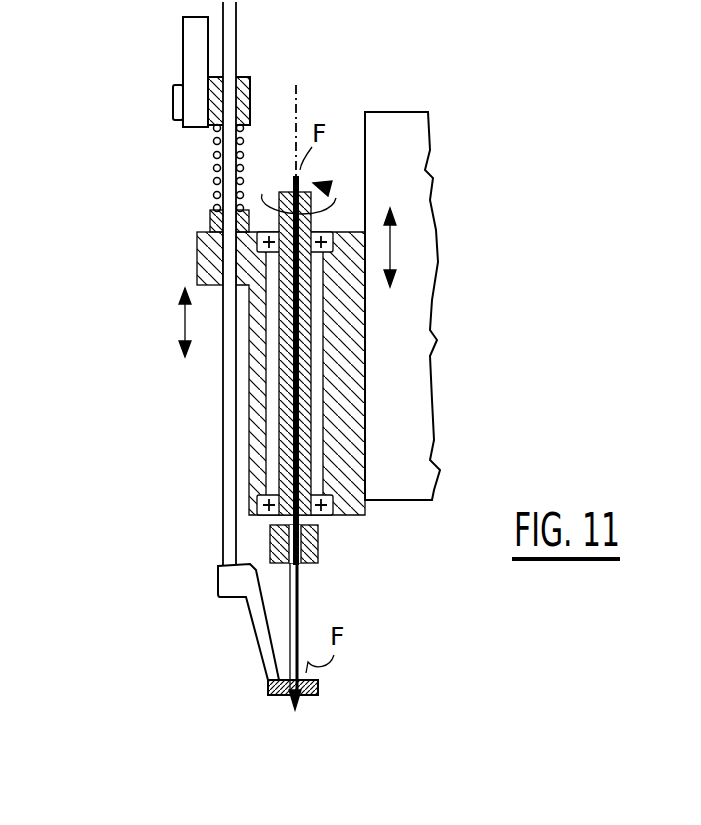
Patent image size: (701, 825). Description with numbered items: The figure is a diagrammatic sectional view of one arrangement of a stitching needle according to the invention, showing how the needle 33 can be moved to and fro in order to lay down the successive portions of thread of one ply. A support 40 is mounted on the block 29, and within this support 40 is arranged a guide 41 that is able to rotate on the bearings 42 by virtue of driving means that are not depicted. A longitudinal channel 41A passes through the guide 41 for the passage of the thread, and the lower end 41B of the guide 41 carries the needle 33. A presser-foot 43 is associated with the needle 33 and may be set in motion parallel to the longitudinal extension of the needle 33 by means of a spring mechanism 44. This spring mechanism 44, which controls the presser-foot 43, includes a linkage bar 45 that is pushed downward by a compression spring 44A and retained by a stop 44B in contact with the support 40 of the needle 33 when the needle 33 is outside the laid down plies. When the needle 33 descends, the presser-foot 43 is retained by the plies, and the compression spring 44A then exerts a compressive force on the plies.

The block 29 is at (414, 390).
The needle 33 is at (299, 616).
The support 40 is at (366, 518).
The guide 41 is at (282, 197).
The longitudinal channel 41A is at (296, 378).
The lower end of guide 41B is at (314, 548).
The bearings 42 is at (260, 520).
The presser-foot 43 is at (254, 628).
The spring mechanism 44 is at (198, 145).
The compression spring 44A is at (241, 150).
The stop 44B is at (210, 218).
The linkage bar 45 is at (228, 437).